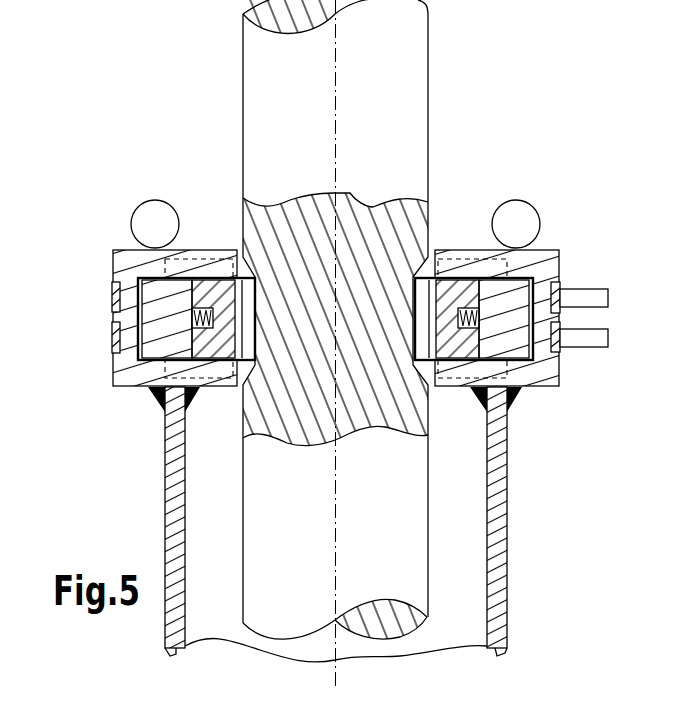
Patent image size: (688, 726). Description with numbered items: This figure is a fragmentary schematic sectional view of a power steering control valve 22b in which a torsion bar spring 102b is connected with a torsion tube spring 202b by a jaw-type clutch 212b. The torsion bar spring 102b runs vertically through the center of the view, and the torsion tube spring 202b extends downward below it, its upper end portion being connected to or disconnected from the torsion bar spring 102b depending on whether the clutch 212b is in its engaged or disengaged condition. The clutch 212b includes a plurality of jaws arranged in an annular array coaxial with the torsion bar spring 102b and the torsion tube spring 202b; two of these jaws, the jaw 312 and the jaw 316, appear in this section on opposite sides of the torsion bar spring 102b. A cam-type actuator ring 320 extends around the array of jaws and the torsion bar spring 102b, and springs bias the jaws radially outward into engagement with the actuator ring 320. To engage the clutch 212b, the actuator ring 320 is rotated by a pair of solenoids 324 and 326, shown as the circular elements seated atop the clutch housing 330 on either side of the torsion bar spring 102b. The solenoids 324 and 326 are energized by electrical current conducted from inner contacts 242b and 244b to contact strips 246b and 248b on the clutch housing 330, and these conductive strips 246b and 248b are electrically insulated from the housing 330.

The torsion bar spring 102b is at (390, 62).
The clutch 212b is at (130, 152).
The power steering control valve 22b is at (580, 138).
The solenoid 324 is at (163, 222).
The solenoid 326 is at (535, 214).
The clutch housing 330 is at (462, 252).
The contact strip 246b is at (112, 292).
The contact strip 248b is at (112, 331).
The inner contact 242b is at (580, 297).
The inner contact 244b is at (582, 340).
The actuator ring 320 is at (157, 340).
The jaw 316 is at (180, 374).
The jaw 312 is at (483, 338).
The torsion tube spring 202b is at (507, 565).